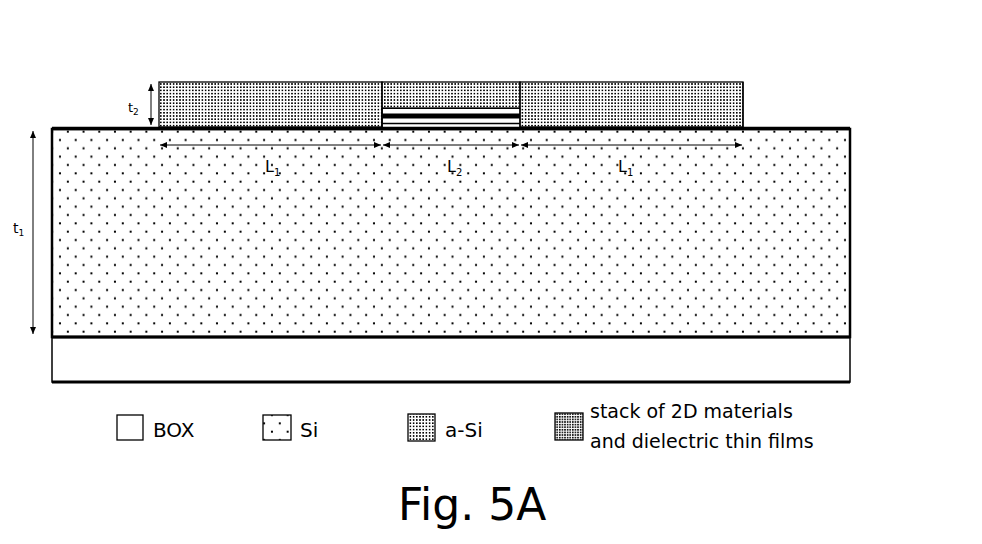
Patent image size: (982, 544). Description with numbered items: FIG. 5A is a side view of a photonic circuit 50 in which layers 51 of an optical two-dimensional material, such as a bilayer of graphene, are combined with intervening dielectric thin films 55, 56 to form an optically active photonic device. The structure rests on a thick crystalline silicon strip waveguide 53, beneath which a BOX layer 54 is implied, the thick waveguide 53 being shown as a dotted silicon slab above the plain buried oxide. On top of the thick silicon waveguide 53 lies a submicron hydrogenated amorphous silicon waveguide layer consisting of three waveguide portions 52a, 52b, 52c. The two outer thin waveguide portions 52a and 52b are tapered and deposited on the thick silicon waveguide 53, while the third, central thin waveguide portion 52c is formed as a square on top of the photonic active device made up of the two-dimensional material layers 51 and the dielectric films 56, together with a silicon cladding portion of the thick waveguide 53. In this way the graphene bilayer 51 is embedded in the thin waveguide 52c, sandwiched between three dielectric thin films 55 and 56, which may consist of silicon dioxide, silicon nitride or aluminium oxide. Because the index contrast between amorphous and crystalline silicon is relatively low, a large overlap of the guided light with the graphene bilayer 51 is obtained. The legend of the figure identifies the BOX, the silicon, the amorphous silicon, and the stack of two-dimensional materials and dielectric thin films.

The photonic circuit 50 is at (793, 102).
The layers of optical 2D material 51 is at (522, 126).
The thin waveguide portion 52a is at (665, 100).
The thin waveguide portion 52b is at (303, 82).
The central thin waveguide portion 52c is at (480, 92).
The thick Si strip waveguide 53 is at (805, 288).
The BOX layer 54 is at (813, 367).
The dielectric thin film 55 is at (850, 128).
The dielectric thin film 56 is at (381, 123).